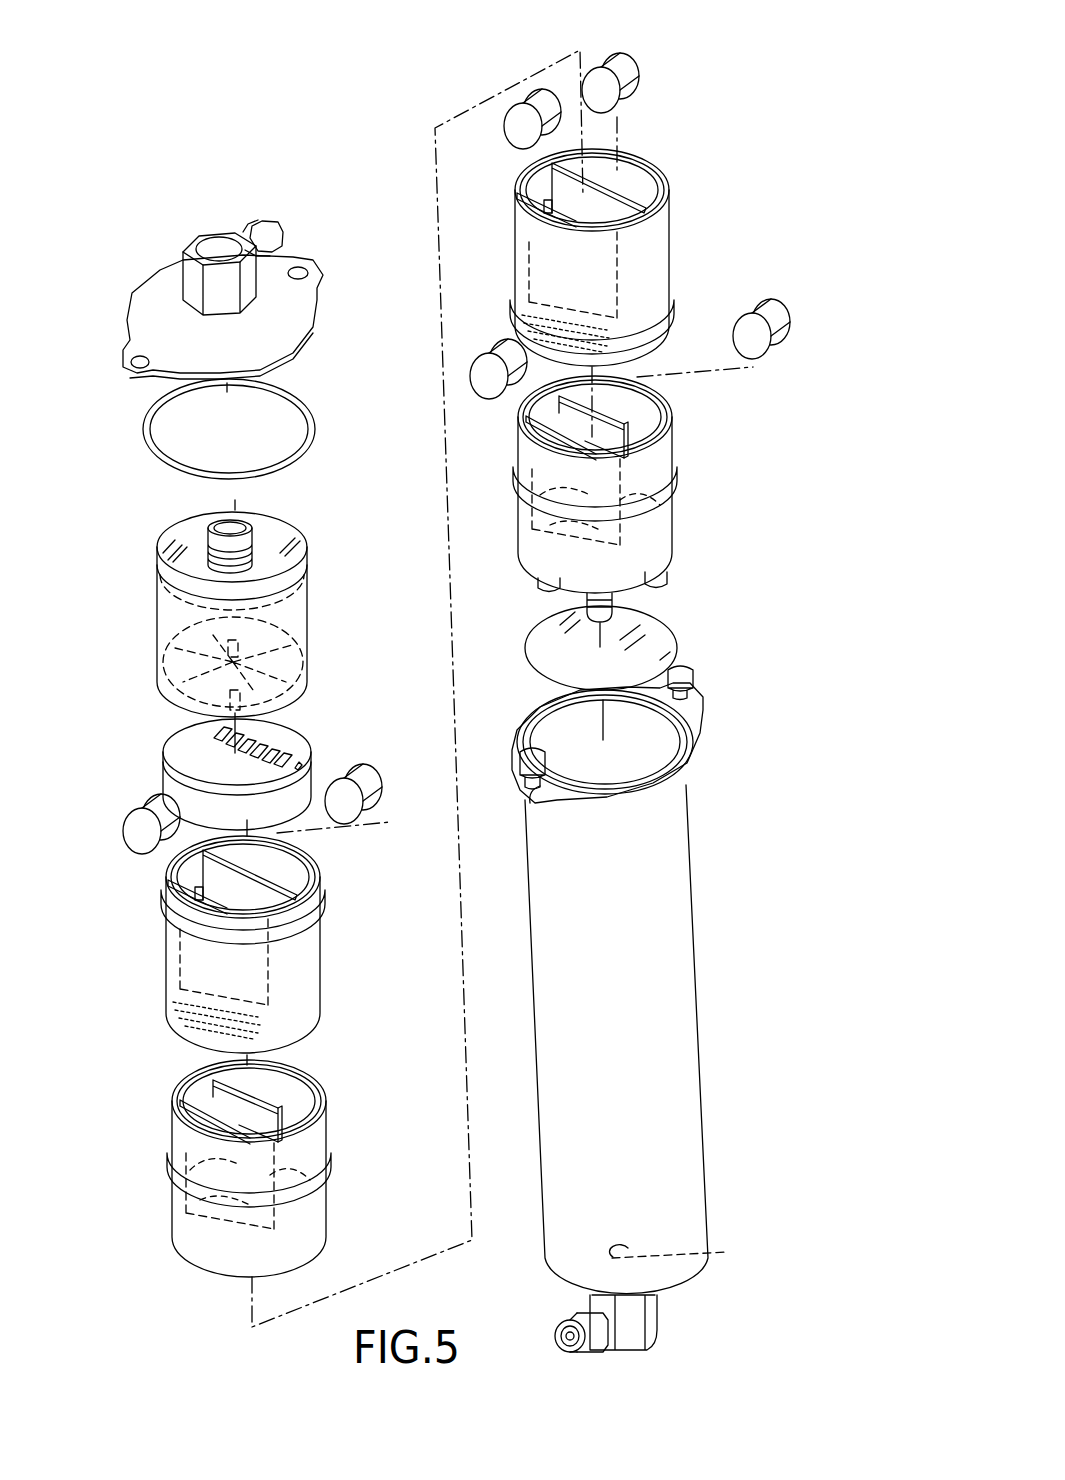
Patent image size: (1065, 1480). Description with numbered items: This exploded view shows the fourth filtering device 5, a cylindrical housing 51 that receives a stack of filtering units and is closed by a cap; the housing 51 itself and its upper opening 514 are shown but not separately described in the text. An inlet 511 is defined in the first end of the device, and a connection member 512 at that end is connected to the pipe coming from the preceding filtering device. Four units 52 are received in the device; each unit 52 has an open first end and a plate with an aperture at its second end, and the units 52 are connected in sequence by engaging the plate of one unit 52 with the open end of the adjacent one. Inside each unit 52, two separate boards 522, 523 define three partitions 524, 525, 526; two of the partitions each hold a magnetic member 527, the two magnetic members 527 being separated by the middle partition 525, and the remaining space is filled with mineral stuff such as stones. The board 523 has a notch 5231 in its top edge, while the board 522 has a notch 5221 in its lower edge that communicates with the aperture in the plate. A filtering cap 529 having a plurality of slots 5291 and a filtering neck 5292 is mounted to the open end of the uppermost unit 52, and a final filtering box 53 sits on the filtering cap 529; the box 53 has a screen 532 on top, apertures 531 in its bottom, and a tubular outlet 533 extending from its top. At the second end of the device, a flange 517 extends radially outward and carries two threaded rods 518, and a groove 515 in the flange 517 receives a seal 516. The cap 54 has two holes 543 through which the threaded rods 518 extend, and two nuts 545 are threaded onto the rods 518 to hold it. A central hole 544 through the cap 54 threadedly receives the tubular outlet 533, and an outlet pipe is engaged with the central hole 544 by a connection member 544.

The fourth filtering device 5 is at (122, 252).
The tubular housing 51 is at (707, 937).
The inlet 511 is at (727, 1252).
The connection member 512 is at (660, 1330).
The housing top opening 514 is at (643, 740).
The groove 515 is at (657, 780).
The seal 516 is at (313, 437).
The flange 517 is at (540, 803).
The threaded rods 518 is at (518, 772).
The unit 52 is at (318, 950).
The separate board 522 is at (310, 896).
The notch 5221 is at (293, 997).
The separate board 523 is at (220, 905).
The notch 5231 is at (183, 895).
The partition 524 is at (280, 860).
The middle partition 525 is at (267, 900).
The partition 526 is at (220, 910).
The magnetic member 527 is at (370, 815).
The filtering cap 529 is at (178, 766).
The slots 5291 is at (290, 742).
The filtering neck 5292 is at (175, 796).
The final filtering box 53 is at (328, 637).
The apertures 531 is at (173, 672).
The screen 532 is at (175, 565).
The tubular outlet 533 is at (208, 543).
The cap 54 is at (167, 280).
The holes 543 is at (143, 370).
The central hole 544 is at (214, 237).
The nuts 545 is at (522, 727).